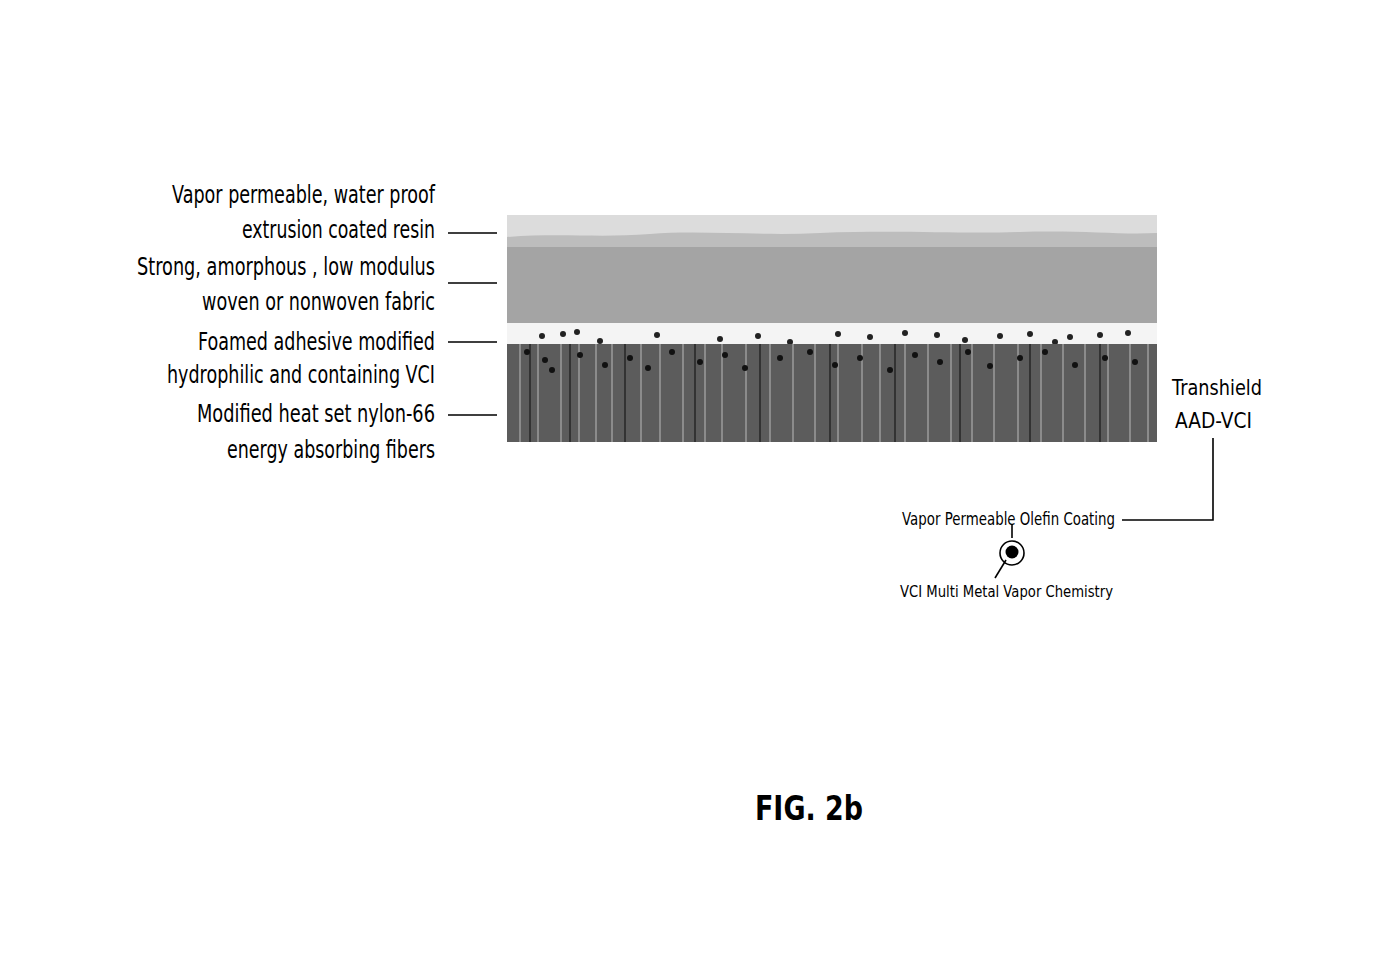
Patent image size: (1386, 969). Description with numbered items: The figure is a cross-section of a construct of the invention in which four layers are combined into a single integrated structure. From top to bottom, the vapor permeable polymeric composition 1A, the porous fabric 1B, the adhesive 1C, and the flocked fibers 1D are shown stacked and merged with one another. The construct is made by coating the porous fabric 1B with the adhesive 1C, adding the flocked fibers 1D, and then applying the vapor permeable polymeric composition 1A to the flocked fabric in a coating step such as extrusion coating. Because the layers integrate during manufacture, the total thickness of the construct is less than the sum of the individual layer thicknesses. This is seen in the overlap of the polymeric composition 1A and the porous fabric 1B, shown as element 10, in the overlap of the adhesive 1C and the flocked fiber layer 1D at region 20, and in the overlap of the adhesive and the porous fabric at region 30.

The overlap of polymeric composition and porous fabric 10 is at (1157, 243).
The overlap region of adhesive and flocked fiber layer 20 is at (1140, 362).
The overlap region of adhesive and porous fabric 30 is at (1158, 330).
The vapor permeable polymeric composition 1A is at (508, 223).
The porous fabric 1B is at (505, 272).
The adhesive 1C is at (505, 335).
The flocked fibers 1D is at (507, 420).